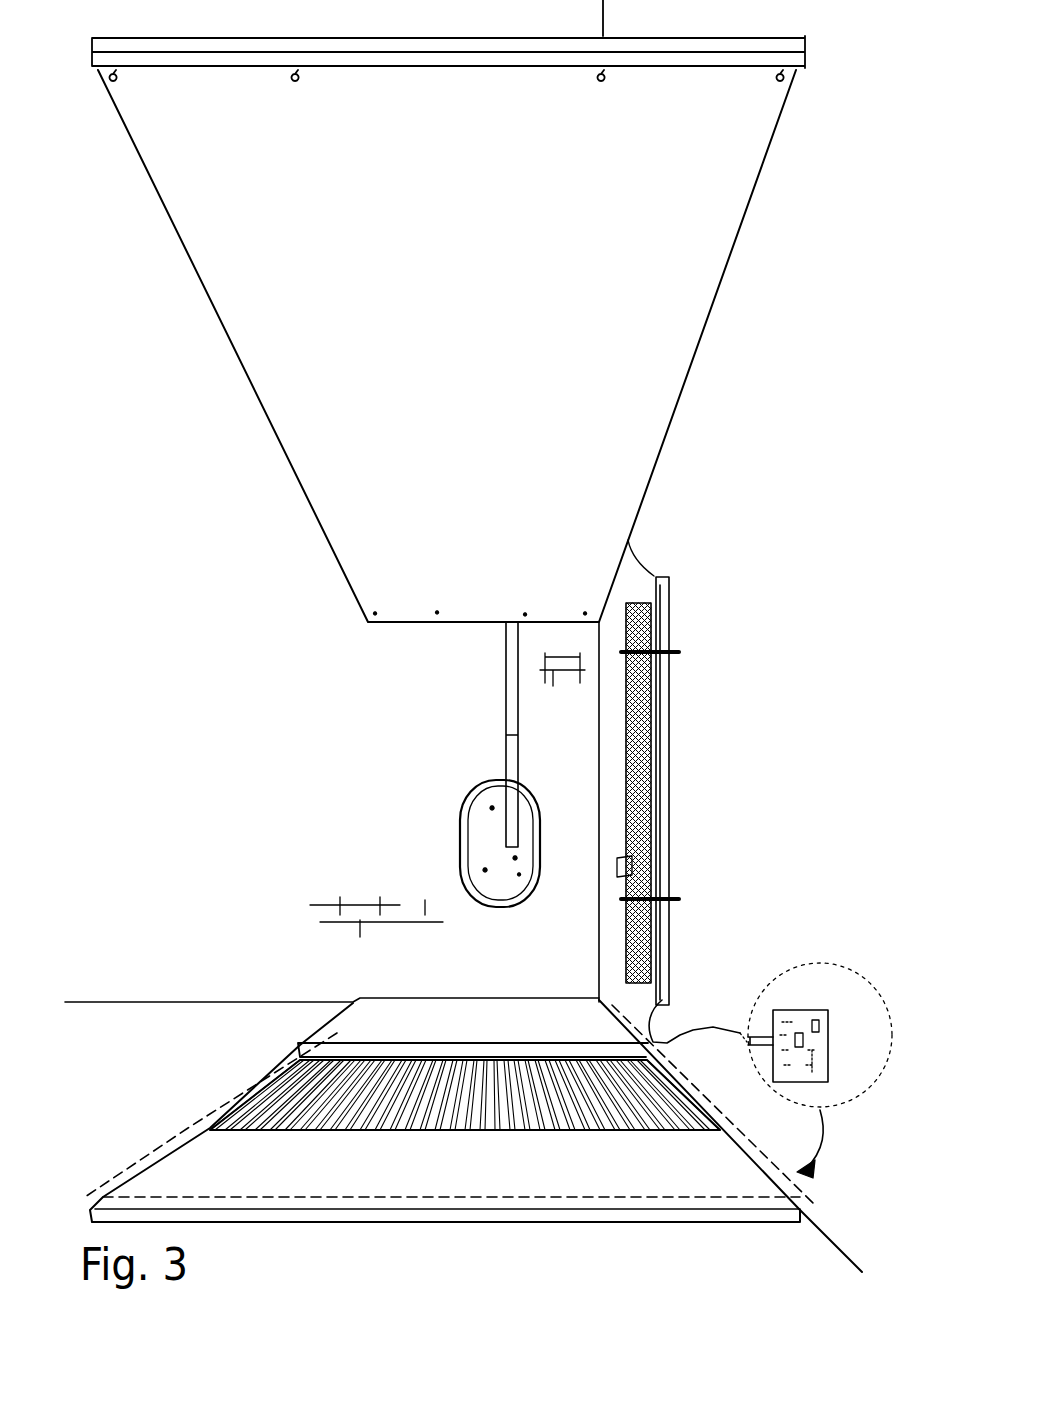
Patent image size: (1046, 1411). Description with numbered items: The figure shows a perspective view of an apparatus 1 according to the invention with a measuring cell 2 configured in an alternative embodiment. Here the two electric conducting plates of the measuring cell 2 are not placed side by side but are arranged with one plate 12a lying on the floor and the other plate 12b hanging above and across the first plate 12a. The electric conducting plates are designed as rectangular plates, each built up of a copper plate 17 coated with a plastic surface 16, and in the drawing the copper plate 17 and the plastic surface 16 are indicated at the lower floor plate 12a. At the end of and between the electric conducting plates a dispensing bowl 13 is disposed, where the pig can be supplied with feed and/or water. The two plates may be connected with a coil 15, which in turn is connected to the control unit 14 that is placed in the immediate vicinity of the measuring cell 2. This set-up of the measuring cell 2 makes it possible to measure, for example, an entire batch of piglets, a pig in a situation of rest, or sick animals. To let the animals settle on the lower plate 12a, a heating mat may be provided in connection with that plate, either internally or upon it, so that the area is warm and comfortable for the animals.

The apparatus 1 is at (200, 784).
The measuring cell 2 is at (706, 407).
The plate on the floor 12a is at (717, 1217).
The hanging plate 12b is at (672, 283).
The dispensing bowl 13 is at (480, 797).
The control unit 14 is at (845, 1003).
The coil 15 is at (630, 740).
The plastic surface 16 is at (347, 1030).
The copper plate 17 is at (277, 1108).